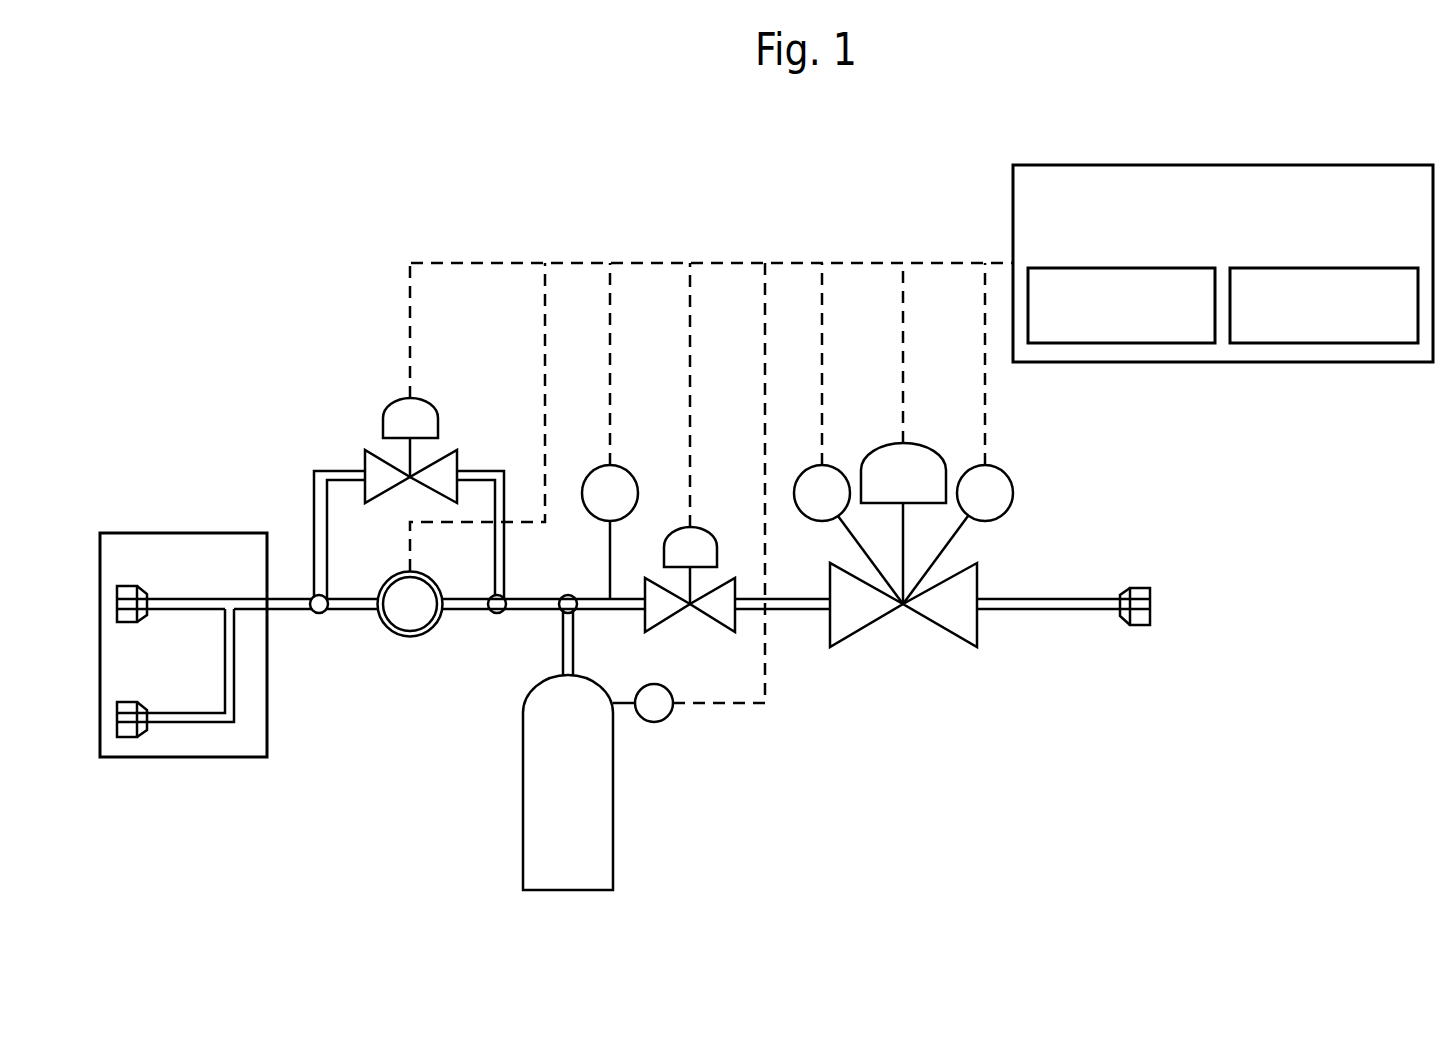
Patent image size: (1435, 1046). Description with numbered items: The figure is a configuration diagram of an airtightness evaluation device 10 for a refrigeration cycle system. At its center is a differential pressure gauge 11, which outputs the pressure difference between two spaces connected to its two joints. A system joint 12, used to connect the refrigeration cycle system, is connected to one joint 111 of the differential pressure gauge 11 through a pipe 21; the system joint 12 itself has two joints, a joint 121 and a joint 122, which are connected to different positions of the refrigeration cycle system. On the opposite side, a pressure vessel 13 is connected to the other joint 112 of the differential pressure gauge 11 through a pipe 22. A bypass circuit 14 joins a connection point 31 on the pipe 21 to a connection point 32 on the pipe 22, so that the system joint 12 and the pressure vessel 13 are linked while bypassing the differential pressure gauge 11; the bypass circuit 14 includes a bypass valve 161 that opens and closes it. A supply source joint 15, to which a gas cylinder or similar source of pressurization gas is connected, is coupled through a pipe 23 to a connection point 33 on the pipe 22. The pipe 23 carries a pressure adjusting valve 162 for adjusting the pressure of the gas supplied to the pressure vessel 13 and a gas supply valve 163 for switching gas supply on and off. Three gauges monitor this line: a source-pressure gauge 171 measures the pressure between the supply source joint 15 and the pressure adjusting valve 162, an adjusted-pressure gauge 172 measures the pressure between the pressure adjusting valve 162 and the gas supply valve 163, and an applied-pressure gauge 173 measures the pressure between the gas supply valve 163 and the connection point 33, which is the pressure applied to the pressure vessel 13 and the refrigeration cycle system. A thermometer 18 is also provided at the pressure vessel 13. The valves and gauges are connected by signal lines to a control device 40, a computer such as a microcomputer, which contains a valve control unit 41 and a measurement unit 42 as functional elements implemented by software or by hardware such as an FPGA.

The airtightness evaluation device 10 is at (737, 131).
The differential pressure gauge 11 is at (421, 638).
The one joint of the differential pressure gauge 111 is at (377, 612).
The other joint of the differential pressure gauge 112 is at (446, 612).
The system joint 12 is at (200, 533).
The joint 121 is at (140, 587).
The joint 122 is at (140, 702).
The pressure vessel 13 is at (613, 776).
The bypass circuit 14 is at (470, 469).
The supply source joint 15 is at (1128, 586).
The bypass valve 161 is at (432, 403).
The pressure adjusting valve 162 is at (906, 444).
The gas supply valve 163 is at (702, 525).
The source-pressure gauge 171 is at (990, 467).
The adjusted-pressure gauge 172 is at (851, 450).
The applied-pressure gauge 173 is at (625, 470).
The thermometer 18 is at (669, 717).
The pipe 21 is at (337, 611).
The pipe 22 is at (545, 611).
The pipe 23 is at (813, 612).
The connection point 31 is at (325, 597).
The connection point 32 is at (489, 596).
The connection point 33 is at (568, 595).
The control device 40 is at (1232, 165).
The valve control unit 41 is at (1130, 268).
The measurement unit 42 is at (1313, 268).